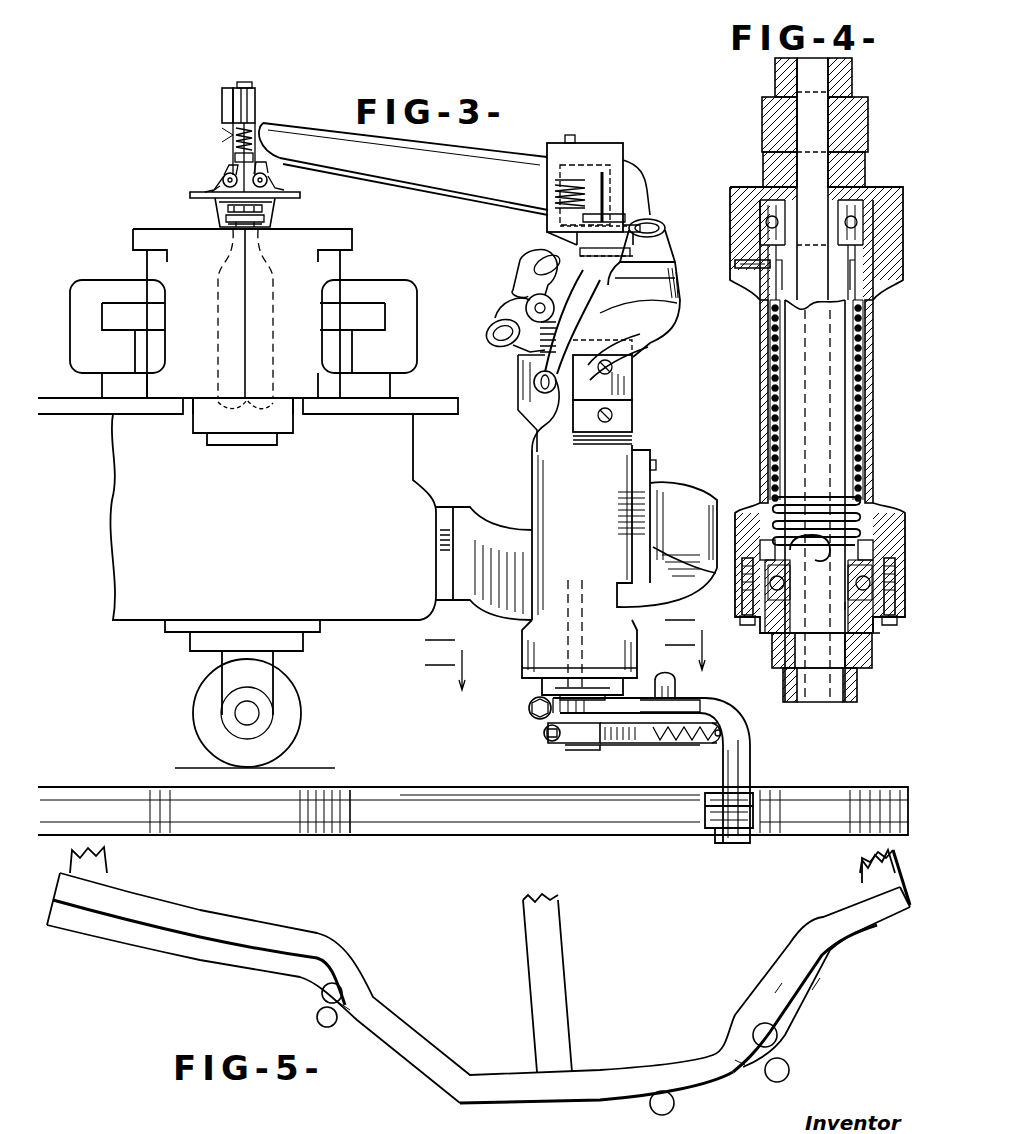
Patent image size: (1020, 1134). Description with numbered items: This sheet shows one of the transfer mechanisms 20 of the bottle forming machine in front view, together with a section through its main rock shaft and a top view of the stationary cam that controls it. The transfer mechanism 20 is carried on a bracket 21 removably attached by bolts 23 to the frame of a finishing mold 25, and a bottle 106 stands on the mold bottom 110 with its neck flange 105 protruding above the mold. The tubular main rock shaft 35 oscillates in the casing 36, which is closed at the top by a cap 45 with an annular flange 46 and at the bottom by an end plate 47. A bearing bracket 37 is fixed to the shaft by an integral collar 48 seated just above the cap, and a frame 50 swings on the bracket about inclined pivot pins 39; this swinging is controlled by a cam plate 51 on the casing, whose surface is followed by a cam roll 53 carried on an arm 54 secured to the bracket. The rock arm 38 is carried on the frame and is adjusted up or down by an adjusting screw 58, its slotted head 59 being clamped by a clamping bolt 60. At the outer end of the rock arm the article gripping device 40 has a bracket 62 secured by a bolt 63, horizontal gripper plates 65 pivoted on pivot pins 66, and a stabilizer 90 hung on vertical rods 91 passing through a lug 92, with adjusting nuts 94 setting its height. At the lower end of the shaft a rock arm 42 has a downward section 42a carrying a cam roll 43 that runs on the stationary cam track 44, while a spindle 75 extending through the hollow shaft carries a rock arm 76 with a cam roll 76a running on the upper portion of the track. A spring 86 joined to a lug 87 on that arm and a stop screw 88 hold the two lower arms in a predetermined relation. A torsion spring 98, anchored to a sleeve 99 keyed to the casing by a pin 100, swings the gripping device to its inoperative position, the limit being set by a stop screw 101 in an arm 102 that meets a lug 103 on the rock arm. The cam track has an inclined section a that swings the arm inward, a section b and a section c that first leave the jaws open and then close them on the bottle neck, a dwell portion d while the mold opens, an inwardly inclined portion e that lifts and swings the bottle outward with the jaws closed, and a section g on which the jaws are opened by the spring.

In FIG. 3, the transfer mechanism 20 is at (663, 430).
In FIG. 3, the bracket 21 is at (512, 552).
In FIG. 3, the bolts 23 is at (460, 520).
In FIG. 3, the finishing mold 25 is at (335, 270).
In FIG. 4, the main rock shaft 35 is at (792, 437).
In FIG. 3, the casing 36 is at (545, 477).
In FIG. 4, the casing 36 is at (762, 475).
In FIG. 3, the bearing bracket 37 is at (676, 300).
In FIG. 3, the rock arm 38 is at (490, 183).
In FIG. 3, the pivot pins 39 is at (650, 228).
In FIG. 3, the article gripping device 40 is at (222, 178).
In FIG. 3, the rock arm 42 is at (695, 705).
In FIG. 4, the rock arm 42 is at (865, 660).
In FIG. 3, the vertical section 42a is at (752, 755).
In FIG. 3, the cam roll 43 is at (755, 822).
In FIG. 5, the cam roll 43 is at (318, 1020).
In FIG. 3, the stationary cam track 44 is at (628, 830).
In FIG. 5, the stationary cam track 44 is at (680, 1065).
In FIG. 3, the cap 45 is at (490, 326).
In FIG. 4, the cap 45 is at (765, 158).
In FIG. 4, the annular flange 46 is at (748, 187).
In FIG. 4, the end plate 47 is at (873, 622).
In FIG. 3, the collar 48 is at (526, 298).
In FIG. 4, the collar 48 is at (770, 120).
In FIG. 3, the frame 50 is at (637, 198).
In FIG. 3, the cam plate 51 is at (632, 360).
In FIG. 3, the cam roll 53 is at (540, 422).
In FIG. 3, the arm 54 is at (540, 362).
In FIG. 3, the adjusting screw 58 is at (575, 180).
In FIG. 3, the slot 59 is at (605, 188).
In FIG. 3, the clamping bolt 60 is at (580, 222).
In FIG. 3, the bracket 62 is at (222, 100).
In FIG. 3, the bolt 63 is at (253, 84).
In FIG. 3, the gripper plates 65 is at (300, 193).
In FIG. 3, the pivot pins 66 is at (268, 182).
In FIG. 3, the spindle 75 is at (577, 748).
In FIG. 4, the spindle 75 is at (790, 365).
In FIG. 3, the rock arm 76 is at (640, 740).
In FIG. 3, the cam roll 76a is at (703, 802).
In FIG. 5, the cam roll 76a is at (813, 1028).
In FIG. 3, the spring 86 is at (690, 745).
In FIG. 3, the lug 87 is at (592, 750).
In FIG. 3, the stop screw 88 is at (600, 745).
In FIG. 3, the stabilizer 90 is at (228, 207).
In FIG. 3, the vertical rods 91 is at (212, 188).
In FIG. 3, the lug 92 is at (235, 157).
In FIG. 3, the adjusting nuts 94 is at (232, 138).
In FIG. 4, the torsion spring 98 is at (772, 333).
In FIG. 4, the sleeve 99 is at (765, 282).
In FIG. 4, the pin 100 is at (745, 260).
In FIG. 3, the stop screw 101 is at (578, 688).
In FIG. 3, the arm 102 is at (578, 600).
In FIG. 3, the lug 103 is at (672, 676).
In FIG. 3, the flange 105 is at (270, 216).
In FIG. 3, the bottle 106 is at (228, 281).
In FIG. 3, the mold bottom 110 is at (256, 425).
In FIG. 3, the lower inclined section a is at (820, 836).
In FIG. 5, the lower inclined section a is at (818, 985).
In FIG. 3, the cam section b is at (820, 792).
In FIG. 5, the cam section b is at (775, 995).
In FIG. 5, the cam section c is at (738, 1068).
In FIG. 5, the dwell portion d is at (600, 1097).
In FIG. 3, the inwardly inclined portion e is at (450, 767).
In FIG. 5, the inwardly inclined portion e is at (406, 1057).
In FIG. 3, the cam section g is at (350, 793).
In FIG. 5, the cam section g is at (340, 1005).